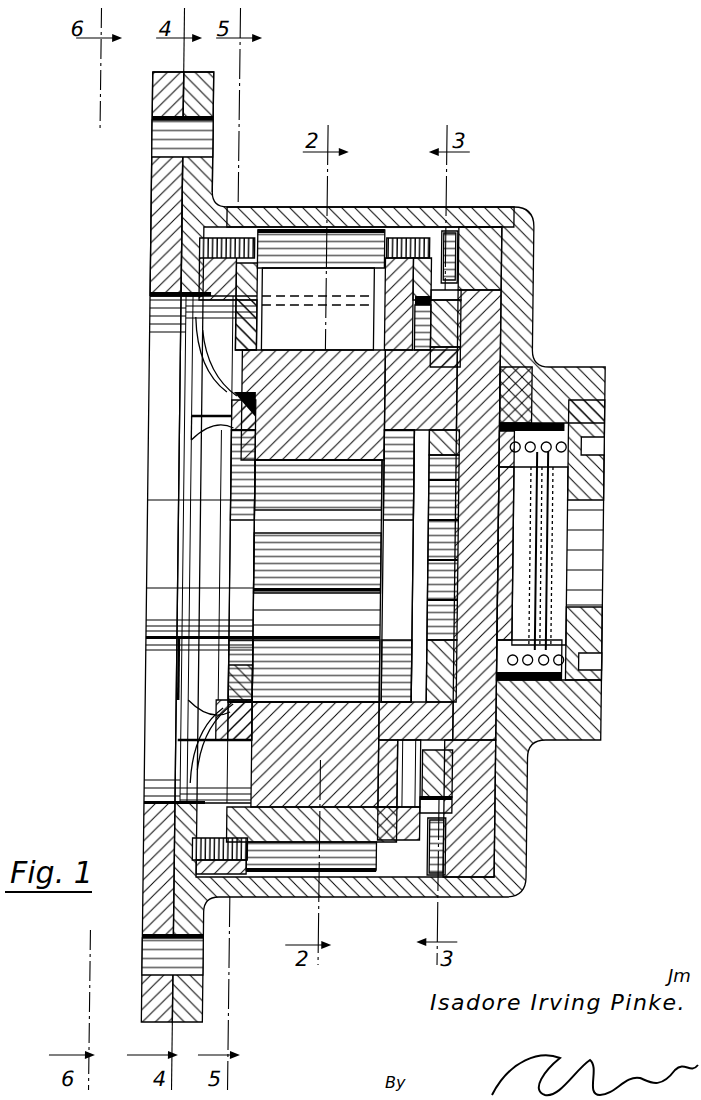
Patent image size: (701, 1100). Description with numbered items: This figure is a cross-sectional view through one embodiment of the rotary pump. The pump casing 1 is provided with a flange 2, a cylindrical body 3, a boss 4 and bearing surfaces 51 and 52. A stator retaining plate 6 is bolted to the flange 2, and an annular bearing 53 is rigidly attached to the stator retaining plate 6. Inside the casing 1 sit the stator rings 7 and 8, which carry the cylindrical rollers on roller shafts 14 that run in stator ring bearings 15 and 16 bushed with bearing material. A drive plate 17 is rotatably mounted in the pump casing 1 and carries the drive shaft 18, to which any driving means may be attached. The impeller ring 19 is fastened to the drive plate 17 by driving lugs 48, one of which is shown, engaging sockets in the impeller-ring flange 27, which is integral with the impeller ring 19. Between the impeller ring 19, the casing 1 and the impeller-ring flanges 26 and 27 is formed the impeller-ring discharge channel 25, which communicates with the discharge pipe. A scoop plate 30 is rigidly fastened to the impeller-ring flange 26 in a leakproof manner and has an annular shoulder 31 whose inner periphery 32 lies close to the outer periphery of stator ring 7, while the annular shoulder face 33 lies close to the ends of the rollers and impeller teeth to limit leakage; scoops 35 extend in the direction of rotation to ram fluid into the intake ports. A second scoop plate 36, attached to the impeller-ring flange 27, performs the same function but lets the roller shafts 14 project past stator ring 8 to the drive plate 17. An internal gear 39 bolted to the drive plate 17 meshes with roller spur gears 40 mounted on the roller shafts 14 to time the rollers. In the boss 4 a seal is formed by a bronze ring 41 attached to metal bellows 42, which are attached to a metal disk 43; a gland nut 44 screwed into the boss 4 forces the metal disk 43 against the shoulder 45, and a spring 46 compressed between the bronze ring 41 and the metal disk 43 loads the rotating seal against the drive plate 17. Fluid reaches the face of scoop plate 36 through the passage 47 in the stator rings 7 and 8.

The pump casing 1 is at (510, 229).
The flange 2 is at (198, 97).
The cylindrical body 3 is at (344, 217).
The boss 4 is at (547, 366).
The stator retaining plate 6 is at (157, 178).
The stator ring 7 is at (215, 424).
The stator ring 8 is at (438, 425).
The roller shaft 14 is at (210, 380).
The stator ring bearing 15 is at (200, 352).
The stator ring bearing 16 is at (431, 348).
The drive plate 17 is at (473, 832).
The drive shaft 18 is at (547, 543).
The impeller ring 19 is at (333, 835).
The impeller-ring discharge channel 25 is at (289, 252).
The impeller-ring flange 26 is at (246, 230).
The impeller-ring flange 27 is at (398, 232).
The scoop plate 30 is at (232, 500).
The annular shoulder 31 is at (225, 315).
The inner periphery 32 is at (235, 348).
The annular shoulder face 33 is at (255, 762).
The scoops 35 is at (200, 398).
The scoop plate 36 is at (397, 317).
The internal gear 39 is at (446, 240).
The roller spur gear 40 is at (435, 323).
The bronze ring 41 is at (580, 445).
The metal bellows 42 is at (572, 473).
The metal disk 43 is at (586, 407).
The gland nut 44 is at (603, 618).
The shoulder 45 is at (602, 673).
The spring 46 is at (576, 440).
The passage 47 is at (300, 525).
The driving lug 48 is at (406, 860).
The bearing surface 51 is at (383, 232).
The bearing surface 52 is at (493, 412).
The annular bearing 53 is at (186, 238).